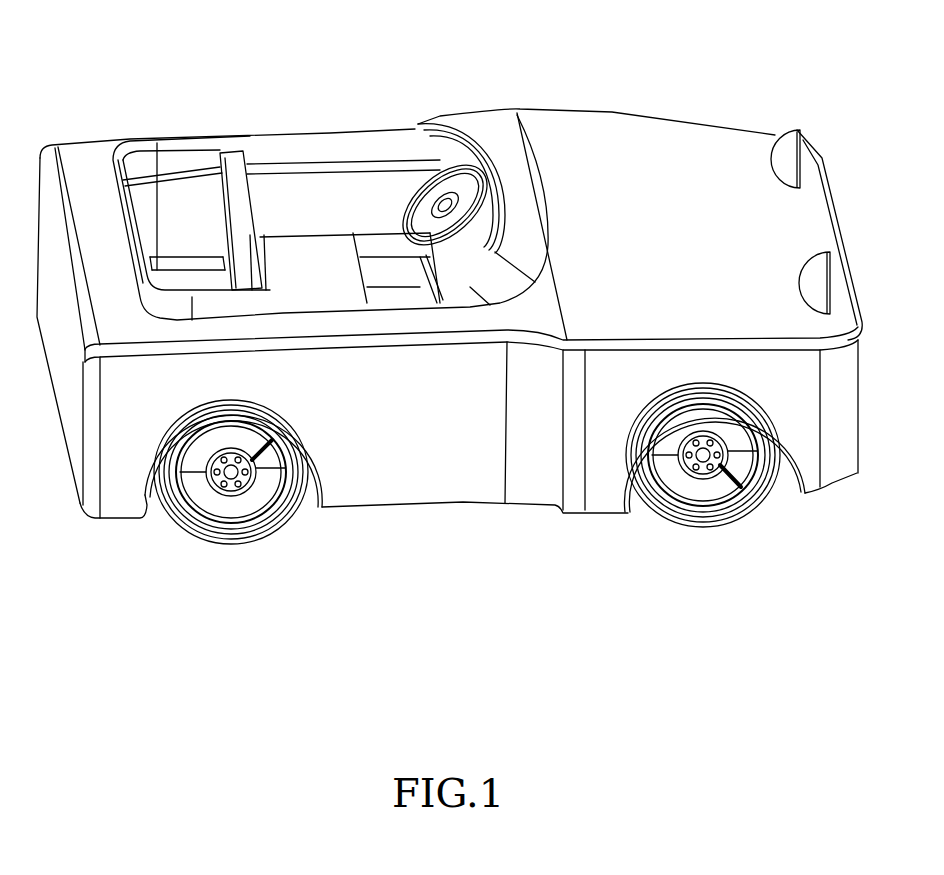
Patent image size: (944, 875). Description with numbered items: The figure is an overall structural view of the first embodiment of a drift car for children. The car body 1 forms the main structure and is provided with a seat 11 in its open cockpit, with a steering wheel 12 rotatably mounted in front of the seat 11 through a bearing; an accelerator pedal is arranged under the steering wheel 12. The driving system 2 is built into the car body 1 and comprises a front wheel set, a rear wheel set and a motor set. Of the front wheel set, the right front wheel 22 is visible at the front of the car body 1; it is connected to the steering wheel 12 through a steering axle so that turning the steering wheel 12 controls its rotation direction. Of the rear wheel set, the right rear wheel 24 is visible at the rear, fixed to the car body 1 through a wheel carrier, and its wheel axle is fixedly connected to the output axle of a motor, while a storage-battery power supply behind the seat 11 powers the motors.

The car body 1 is at (465, 455).
The seat 11 is at (290, 263).
The steering wheel 12 is at (412, 195).
The driving system 2 is at (237, 580).
The right front wheel 22 is at (727, 508).
The right rear wheel 24 is at (200, 523).